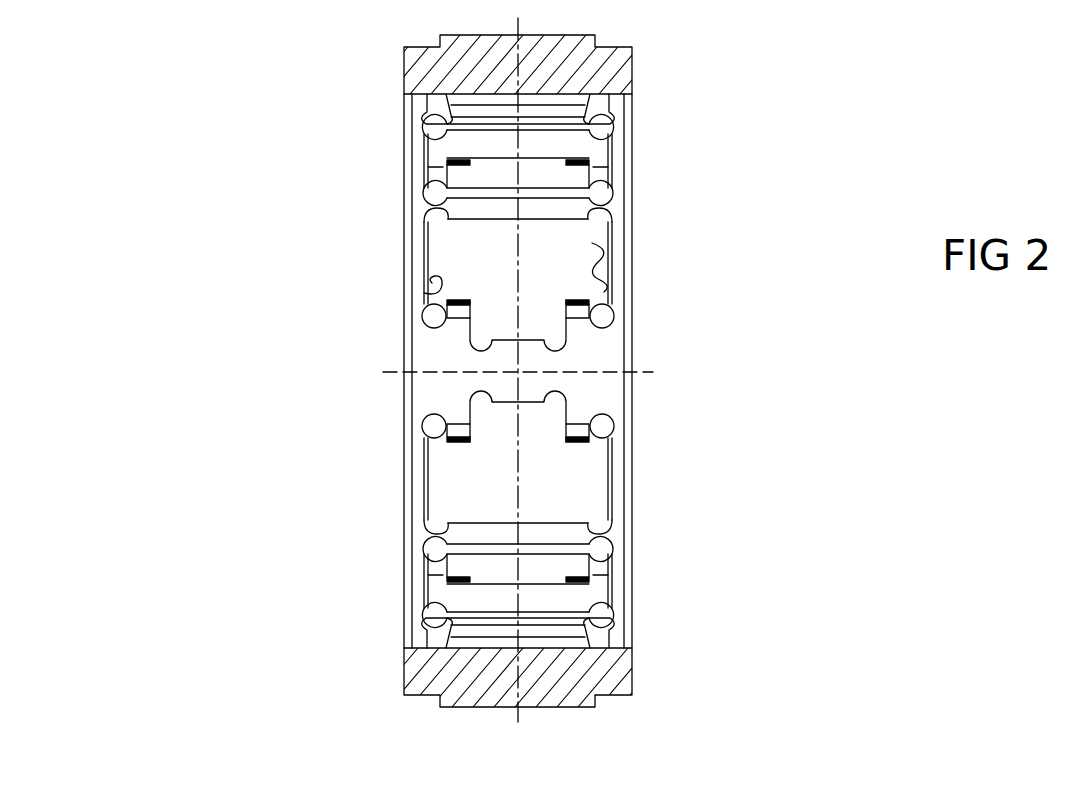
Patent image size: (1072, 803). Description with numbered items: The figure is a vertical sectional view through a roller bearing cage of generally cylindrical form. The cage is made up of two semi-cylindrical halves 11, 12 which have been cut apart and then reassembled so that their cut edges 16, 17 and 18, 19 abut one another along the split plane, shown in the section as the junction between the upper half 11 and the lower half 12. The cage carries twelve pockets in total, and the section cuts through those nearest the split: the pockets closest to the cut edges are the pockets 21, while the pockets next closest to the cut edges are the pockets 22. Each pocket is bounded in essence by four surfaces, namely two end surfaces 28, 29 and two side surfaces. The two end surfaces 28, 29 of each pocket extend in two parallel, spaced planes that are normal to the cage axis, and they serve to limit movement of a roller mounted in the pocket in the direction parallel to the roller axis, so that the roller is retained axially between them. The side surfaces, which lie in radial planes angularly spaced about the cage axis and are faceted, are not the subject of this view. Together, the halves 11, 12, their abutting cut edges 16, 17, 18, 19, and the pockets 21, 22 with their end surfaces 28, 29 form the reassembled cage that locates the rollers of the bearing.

The semi-cylindrical half 11 is at (460, 216).
The semi-cylindrical half 12 is at (468, 575).
The cut edge 16 is at (588, 201).
The cut edge 17 is at (585, 542).
The cut edge 18 is at (583, 367).
The cut edge 19 is at (595, 384).
The pocket 21 is at (582, 495).
The pocket 22 is at (580, 602).
The end surface 28 is at (424, 293).
The end surface 29 is at (593, 290).